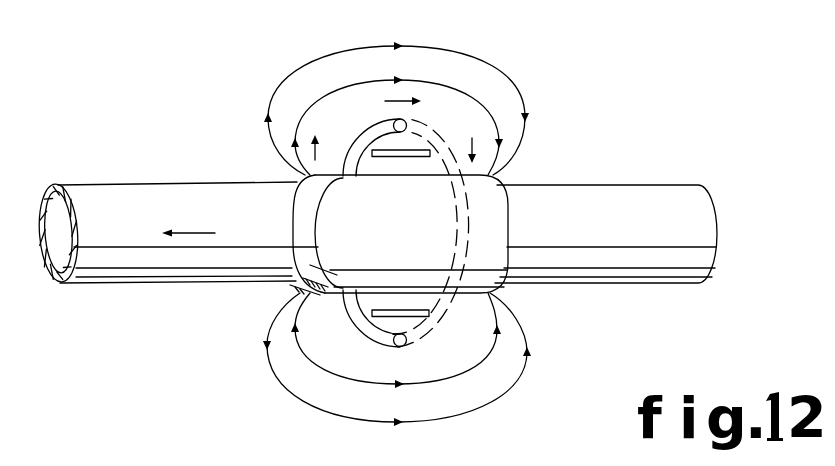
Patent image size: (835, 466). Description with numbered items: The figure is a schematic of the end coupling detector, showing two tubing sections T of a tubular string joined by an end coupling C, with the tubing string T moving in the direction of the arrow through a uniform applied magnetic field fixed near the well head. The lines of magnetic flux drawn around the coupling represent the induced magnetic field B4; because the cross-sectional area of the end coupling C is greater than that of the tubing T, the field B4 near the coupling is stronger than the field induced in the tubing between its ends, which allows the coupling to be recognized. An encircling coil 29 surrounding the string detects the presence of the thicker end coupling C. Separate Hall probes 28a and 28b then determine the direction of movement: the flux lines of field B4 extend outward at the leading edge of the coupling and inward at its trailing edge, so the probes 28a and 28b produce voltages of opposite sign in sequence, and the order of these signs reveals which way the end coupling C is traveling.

The tubing section T is at (186, 200).
The end coupling C is at (498, 250).
The encircling coil 29 is at (408, 123).
The Hall probe detector 28a is at (431, 136).
The Hall probe detector 28b is at (420, 317).
The induced magnetic field B4 is at (397, 224).